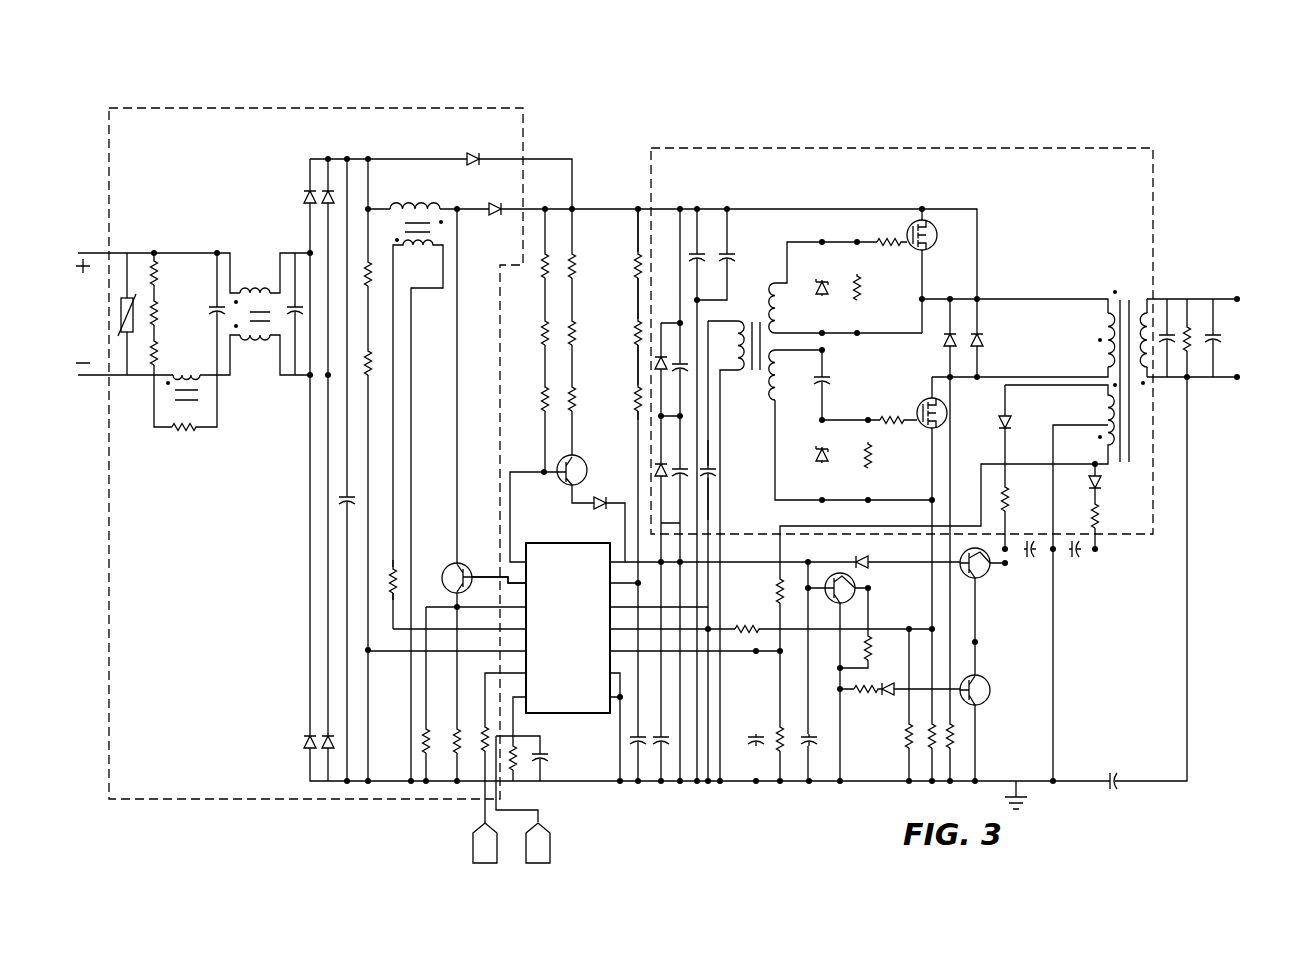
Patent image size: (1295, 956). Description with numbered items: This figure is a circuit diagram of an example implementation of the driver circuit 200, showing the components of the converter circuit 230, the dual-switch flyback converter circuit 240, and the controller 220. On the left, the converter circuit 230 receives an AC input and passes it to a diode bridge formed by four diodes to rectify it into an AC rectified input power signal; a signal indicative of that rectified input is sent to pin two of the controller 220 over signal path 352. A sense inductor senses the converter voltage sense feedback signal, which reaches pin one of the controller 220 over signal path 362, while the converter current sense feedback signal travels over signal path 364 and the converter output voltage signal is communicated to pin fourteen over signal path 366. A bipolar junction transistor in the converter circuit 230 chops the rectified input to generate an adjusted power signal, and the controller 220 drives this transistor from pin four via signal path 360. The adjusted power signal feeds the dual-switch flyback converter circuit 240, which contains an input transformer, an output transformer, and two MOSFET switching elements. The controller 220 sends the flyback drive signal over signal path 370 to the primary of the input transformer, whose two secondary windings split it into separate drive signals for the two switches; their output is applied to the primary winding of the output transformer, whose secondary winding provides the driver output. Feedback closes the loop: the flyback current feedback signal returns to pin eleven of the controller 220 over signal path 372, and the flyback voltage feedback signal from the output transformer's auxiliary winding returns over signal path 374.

The driver circuit 200 is at (1184, 160).
The controller 220 is at (552, 632).
The converter circuit 230 is at (310, 108).
The dual-switch flyback converter circuit 240 is at (872, 148).
The signal path 352 is at (383, 652).
The signal path 360 is at (488, 573).
The signal path 362 is at (393, 497).
The signal path 364 is at (478, 607).
The signal path 366 is at (640, 216).
The signal path 370 is at (710, 500).
The signal path 372 is at (932, 580).
The signal path 374 is at (1017, 465).